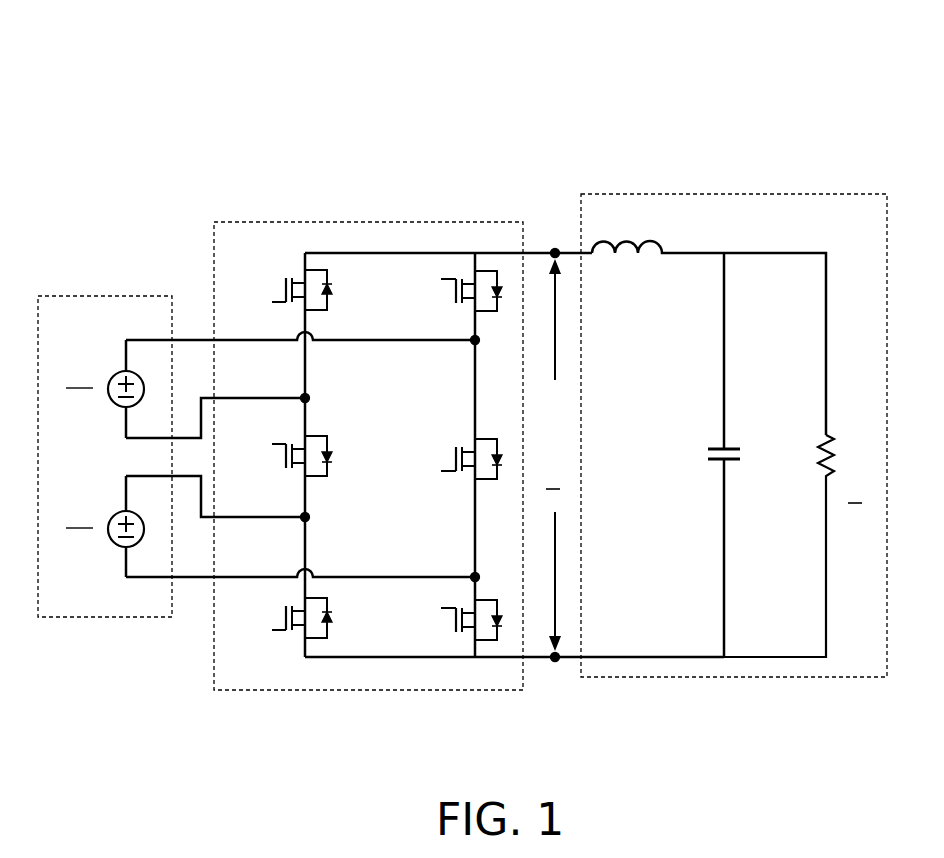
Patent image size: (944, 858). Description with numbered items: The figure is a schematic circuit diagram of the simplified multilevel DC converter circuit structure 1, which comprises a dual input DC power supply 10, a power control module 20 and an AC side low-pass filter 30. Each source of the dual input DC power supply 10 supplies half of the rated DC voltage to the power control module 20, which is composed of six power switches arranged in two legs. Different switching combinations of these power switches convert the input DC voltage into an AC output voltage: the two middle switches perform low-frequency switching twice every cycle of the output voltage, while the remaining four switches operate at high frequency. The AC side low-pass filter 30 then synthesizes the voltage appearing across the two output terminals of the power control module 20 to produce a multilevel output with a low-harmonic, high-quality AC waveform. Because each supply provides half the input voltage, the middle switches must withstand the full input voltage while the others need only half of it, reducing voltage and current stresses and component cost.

The simplified multilevel DC converter circuit structure 1 is at (500, 124).
The dual input DC power supply 10 is at (104, 296).
The power control module 20 is at (368, 222).
The AC side low-pass filter 30 is at (738, 194).